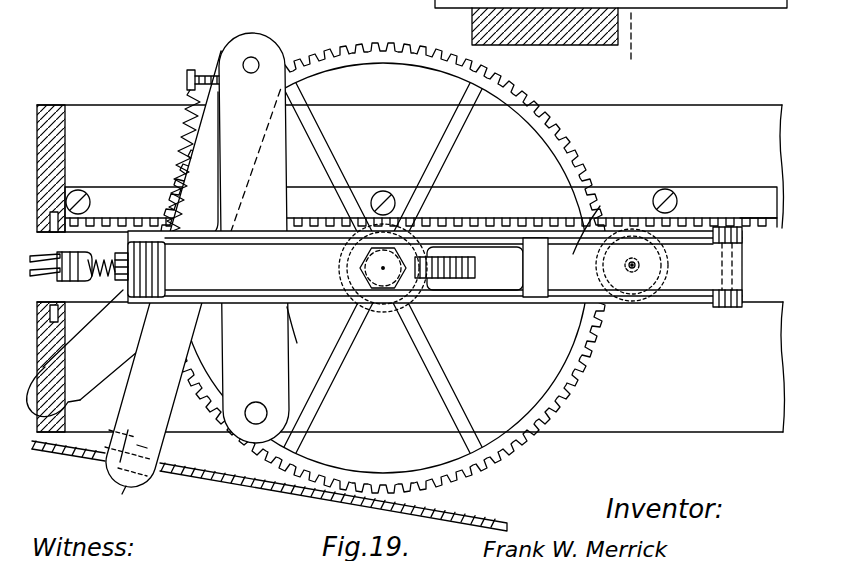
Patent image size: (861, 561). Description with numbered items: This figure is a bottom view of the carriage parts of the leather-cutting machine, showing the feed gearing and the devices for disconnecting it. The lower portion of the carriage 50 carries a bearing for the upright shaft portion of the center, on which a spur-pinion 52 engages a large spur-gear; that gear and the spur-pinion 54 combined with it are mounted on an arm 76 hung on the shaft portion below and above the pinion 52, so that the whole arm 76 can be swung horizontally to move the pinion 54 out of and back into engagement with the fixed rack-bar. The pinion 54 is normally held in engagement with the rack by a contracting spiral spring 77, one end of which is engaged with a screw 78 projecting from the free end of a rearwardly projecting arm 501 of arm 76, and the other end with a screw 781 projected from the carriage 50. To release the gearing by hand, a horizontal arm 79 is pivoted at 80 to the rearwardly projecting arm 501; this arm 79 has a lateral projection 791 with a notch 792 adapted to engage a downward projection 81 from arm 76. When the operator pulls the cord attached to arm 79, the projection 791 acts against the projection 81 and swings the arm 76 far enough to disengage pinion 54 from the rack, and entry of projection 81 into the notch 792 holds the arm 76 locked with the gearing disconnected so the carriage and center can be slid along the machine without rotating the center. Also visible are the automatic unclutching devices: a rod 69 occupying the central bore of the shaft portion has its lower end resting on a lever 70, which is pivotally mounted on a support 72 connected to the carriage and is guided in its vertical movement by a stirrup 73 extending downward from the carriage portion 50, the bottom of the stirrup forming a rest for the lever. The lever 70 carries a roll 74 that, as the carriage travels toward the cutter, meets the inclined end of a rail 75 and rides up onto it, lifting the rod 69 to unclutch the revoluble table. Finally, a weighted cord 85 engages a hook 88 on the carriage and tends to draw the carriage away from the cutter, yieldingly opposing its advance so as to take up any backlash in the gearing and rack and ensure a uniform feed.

The lower portion of the carriage 50 is at (303, 334).
The rearwardly projecting arm 501 is at (283, 60).
The spur-pinion 52 is at (658, 282).
The spur-pinion 54 is at (378, 318).
The rod 69 is at (632, 272).
The lever 70 is at (598, 221).
The support 72 is at (752, 307).
The stirrup 73 is at (534, 276).
The roll 74 is at (454, 280).
The rail 75 is at (668, 2).
The arm 76 is at (350, 302).
The contracting spiral spring 77 is at (186, 131).
The screw 78 is at (150, 292).
The screw 781 is at (186, 80).
The horizontal arm 79 is at (160, 418).
The lateral projection 791 is at (110, 359).
The notch 792 is at (66, 400).
The pivot 80 is at (247, 60).
The downward projection 81 is at (258, 401).
The cord 85 is at (61, 280).
The hook 88 is at (112, 280).